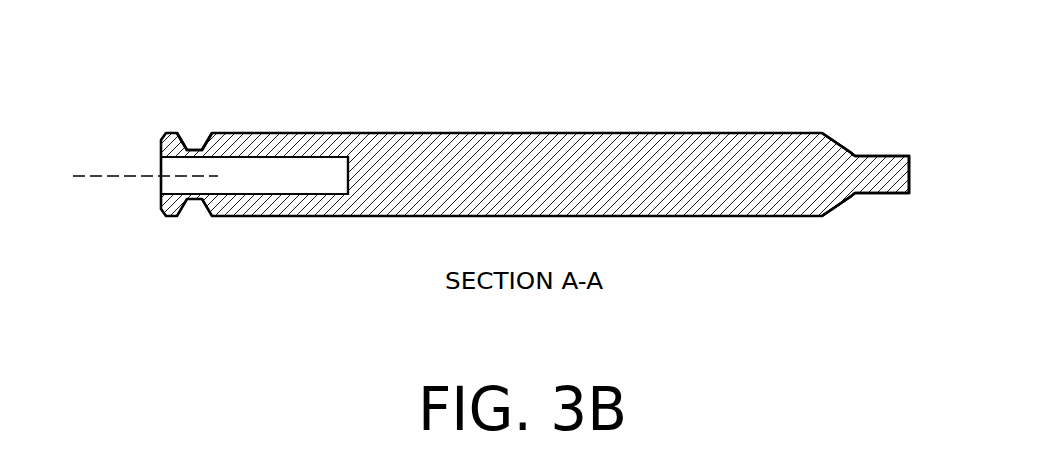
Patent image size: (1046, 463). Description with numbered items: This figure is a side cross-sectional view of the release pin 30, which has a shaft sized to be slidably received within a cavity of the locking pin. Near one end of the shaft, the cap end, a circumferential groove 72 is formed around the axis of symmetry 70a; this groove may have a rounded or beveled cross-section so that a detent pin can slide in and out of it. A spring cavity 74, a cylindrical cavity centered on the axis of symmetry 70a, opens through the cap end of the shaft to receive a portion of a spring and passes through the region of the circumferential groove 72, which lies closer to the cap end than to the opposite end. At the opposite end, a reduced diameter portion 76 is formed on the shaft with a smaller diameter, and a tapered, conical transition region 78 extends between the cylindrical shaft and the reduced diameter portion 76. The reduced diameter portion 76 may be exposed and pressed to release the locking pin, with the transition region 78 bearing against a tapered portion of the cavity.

The release pin 30 is at (577, 80).
The circumferential groove 72 is at (203, 148).
The axis of symmetry 70a is at (136, 175).
The spring cavity 74 is at (178, 195).
The transition region 78 is at (830, 150).
The reduced diameter portion 76 is at (887, 167).